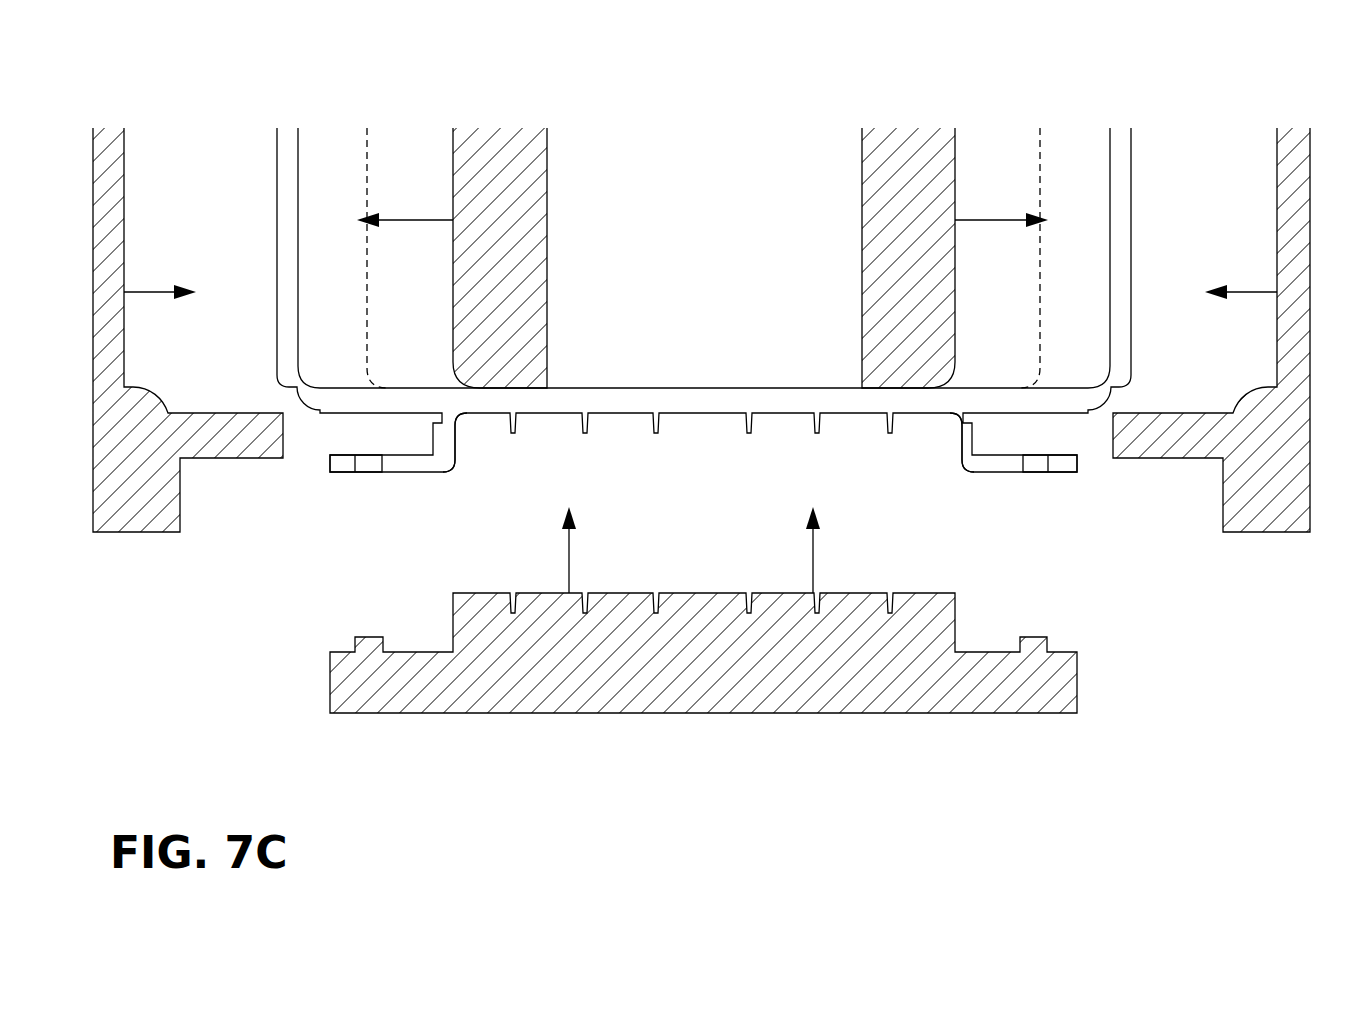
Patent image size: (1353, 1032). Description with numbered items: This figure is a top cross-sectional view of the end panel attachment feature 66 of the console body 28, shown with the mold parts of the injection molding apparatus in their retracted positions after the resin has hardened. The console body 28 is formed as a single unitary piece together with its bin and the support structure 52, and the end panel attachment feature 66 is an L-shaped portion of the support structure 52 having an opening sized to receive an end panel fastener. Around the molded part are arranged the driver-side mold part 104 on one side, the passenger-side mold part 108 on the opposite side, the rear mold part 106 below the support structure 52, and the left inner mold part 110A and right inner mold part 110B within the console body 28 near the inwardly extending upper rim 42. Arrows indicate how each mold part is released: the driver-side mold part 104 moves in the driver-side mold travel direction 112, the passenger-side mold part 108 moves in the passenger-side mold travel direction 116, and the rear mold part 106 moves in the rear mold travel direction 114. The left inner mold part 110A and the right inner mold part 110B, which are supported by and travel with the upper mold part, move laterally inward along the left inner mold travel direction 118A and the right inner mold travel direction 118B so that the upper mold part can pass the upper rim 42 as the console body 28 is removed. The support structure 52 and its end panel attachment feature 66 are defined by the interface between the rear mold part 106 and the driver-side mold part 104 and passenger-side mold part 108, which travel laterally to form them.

The console body 28 is at (1117, 217).
The upper rim 42 is at (367, 283).
The support structure 52 is at (443, 452).
The end panel attachment feature 66 is at (347, 473).
The driver-side mold part 104 is at (120, 535).
The rear mold part 106 is at (466, 714).
The passenger-side mold part 108 is at (1270, 533).
The left inner mold part 110A is at (547, 165).
The right inner mold part 110B is at (862, 158).
The driver-side mold travel direction 112 is at (145, 290).
The rear mold travel direction 114 is at (813, 566).
The passenger-side mold travel direction 116 is at (1257, 290).
The left inner mold travel direction 118A is at (412, 220).
The right inner mold travel direction 118B is at (990, 220).